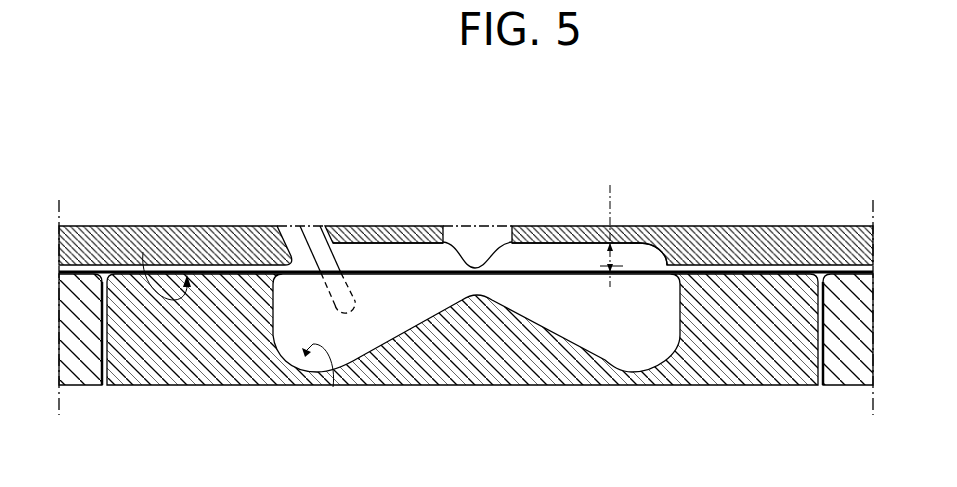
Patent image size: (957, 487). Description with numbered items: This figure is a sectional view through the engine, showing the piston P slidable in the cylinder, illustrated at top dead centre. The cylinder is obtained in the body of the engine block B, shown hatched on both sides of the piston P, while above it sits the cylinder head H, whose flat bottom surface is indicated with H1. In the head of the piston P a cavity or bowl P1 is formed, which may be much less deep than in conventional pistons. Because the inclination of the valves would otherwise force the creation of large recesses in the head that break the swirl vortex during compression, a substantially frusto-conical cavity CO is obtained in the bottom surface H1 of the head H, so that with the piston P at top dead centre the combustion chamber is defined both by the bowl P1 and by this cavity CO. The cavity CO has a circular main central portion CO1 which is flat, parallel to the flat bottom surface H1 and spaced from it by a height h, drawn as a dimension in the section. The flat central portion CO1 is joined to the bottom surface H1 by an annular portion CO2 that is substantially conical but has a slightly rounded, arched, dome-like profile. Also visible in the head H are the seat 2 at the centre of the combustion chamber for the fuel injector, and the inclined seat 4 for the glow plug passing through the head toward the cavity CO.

The cylinder head H is at (773, 238).
The bottom surface of the cylinder head H1 is at (143, 252).
The seat for the glow plug 4 is at (300, 226).
The seat for the fuel injector 2 is at (497, 228).
The height h is at (605, 229).
The annular portion CO2 is at (650, 257).
The frusto-conical cavity CO is at (363, 258).
The circular main central portion CO1 is at (567, 244).
The piston P is at (723, 386).
The bowl P1 is at (333, 387).
The body of the engine block B is at (850, 386).